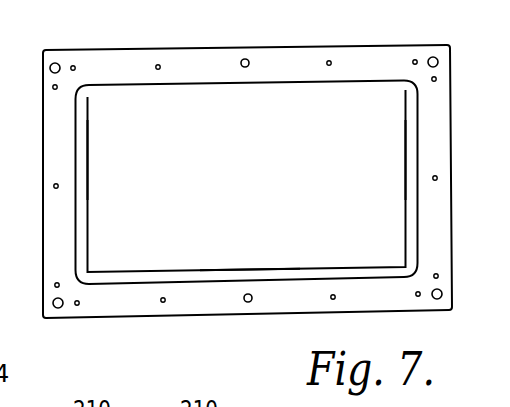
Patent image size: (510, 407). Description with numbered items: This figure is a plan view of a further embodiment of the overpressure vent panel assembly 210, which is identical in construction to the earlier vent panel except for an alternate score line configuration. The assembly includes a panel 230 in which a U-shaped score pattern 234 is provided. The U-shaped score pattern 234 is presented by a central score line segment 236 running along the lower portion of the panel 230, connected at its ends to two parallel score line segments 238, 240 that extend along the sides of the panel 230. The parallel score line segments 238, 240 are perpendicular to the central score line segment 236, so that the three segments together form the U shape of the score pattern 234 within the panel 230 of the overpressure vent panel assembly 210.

The overpressure vent panel assembly 210 is at (192, 38).
The panel 230 is at (290, 92).
The U-shaped score pattern 234 is at (165, 259).
The central score line segment 236 is at (290, 268).
The score line segment 238 is at (88, 163).
The score line segment 240 is at (405, 157).